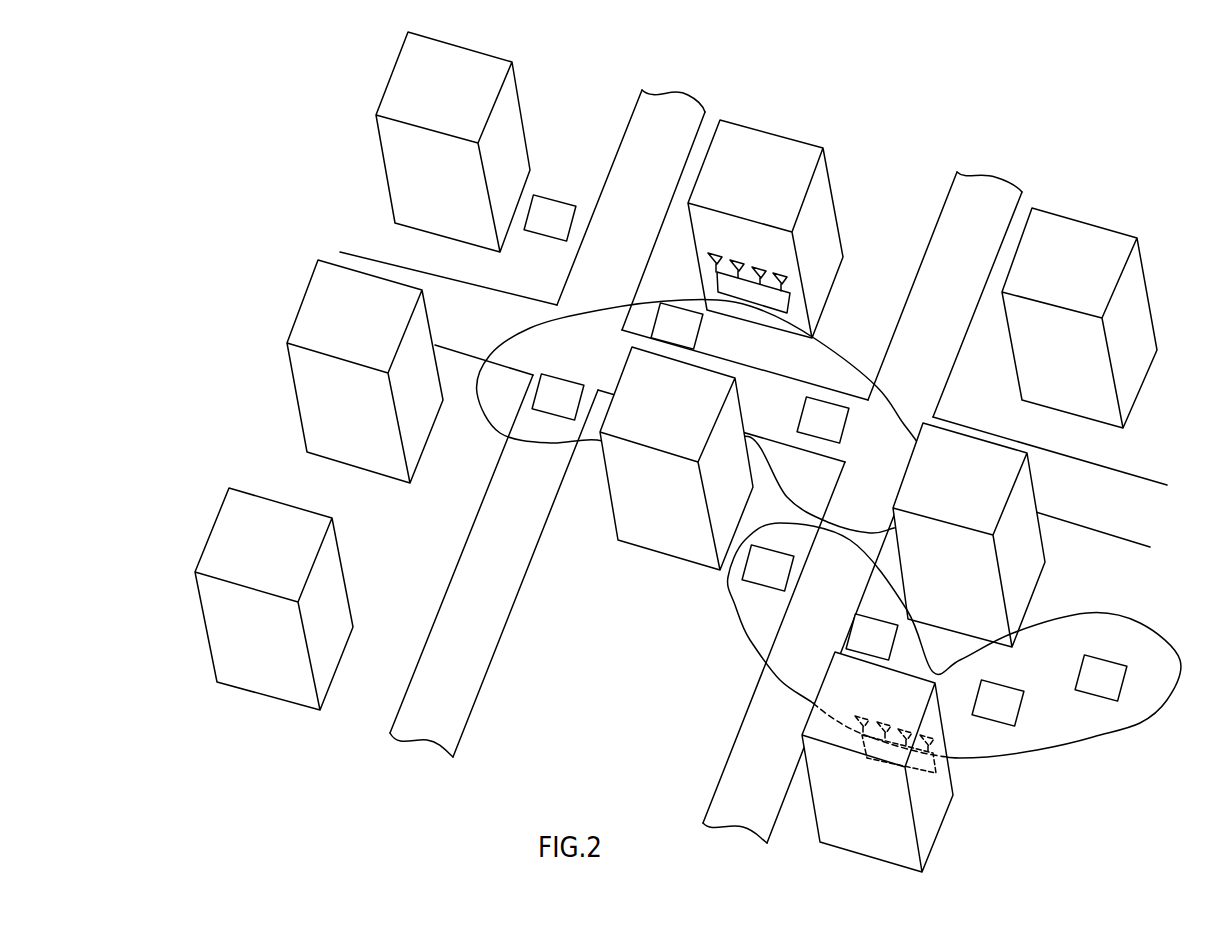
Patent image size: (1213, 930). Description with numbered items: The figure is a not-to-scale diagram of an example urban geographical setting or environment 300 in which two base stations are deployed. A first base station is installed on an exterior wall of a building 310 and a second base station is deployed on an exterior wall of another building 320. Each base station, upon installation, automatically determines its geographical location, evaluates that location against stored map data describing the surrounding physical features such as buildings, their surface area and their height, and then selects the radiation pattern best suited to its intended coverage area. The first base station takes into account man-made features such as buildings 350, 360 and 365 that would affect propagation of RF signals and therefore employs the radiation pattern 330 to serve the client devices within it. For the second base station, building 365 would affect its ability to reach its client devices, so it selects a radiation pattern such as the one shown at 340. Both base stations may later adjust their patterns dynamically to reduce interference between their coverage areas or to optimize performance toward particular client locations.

The urban geographical setting or environment 300 is at (700, 464).
The building 310 is at (770, 229).
The building 320 is at (909, 774).
The radiation pattern 330 is at (888, 404).
The radiation pattern 340 is at (1096, 613).
The building 350 is at (654, 554).
The building 360 is at (297, 414).
The building 365 is at (1036, 496).